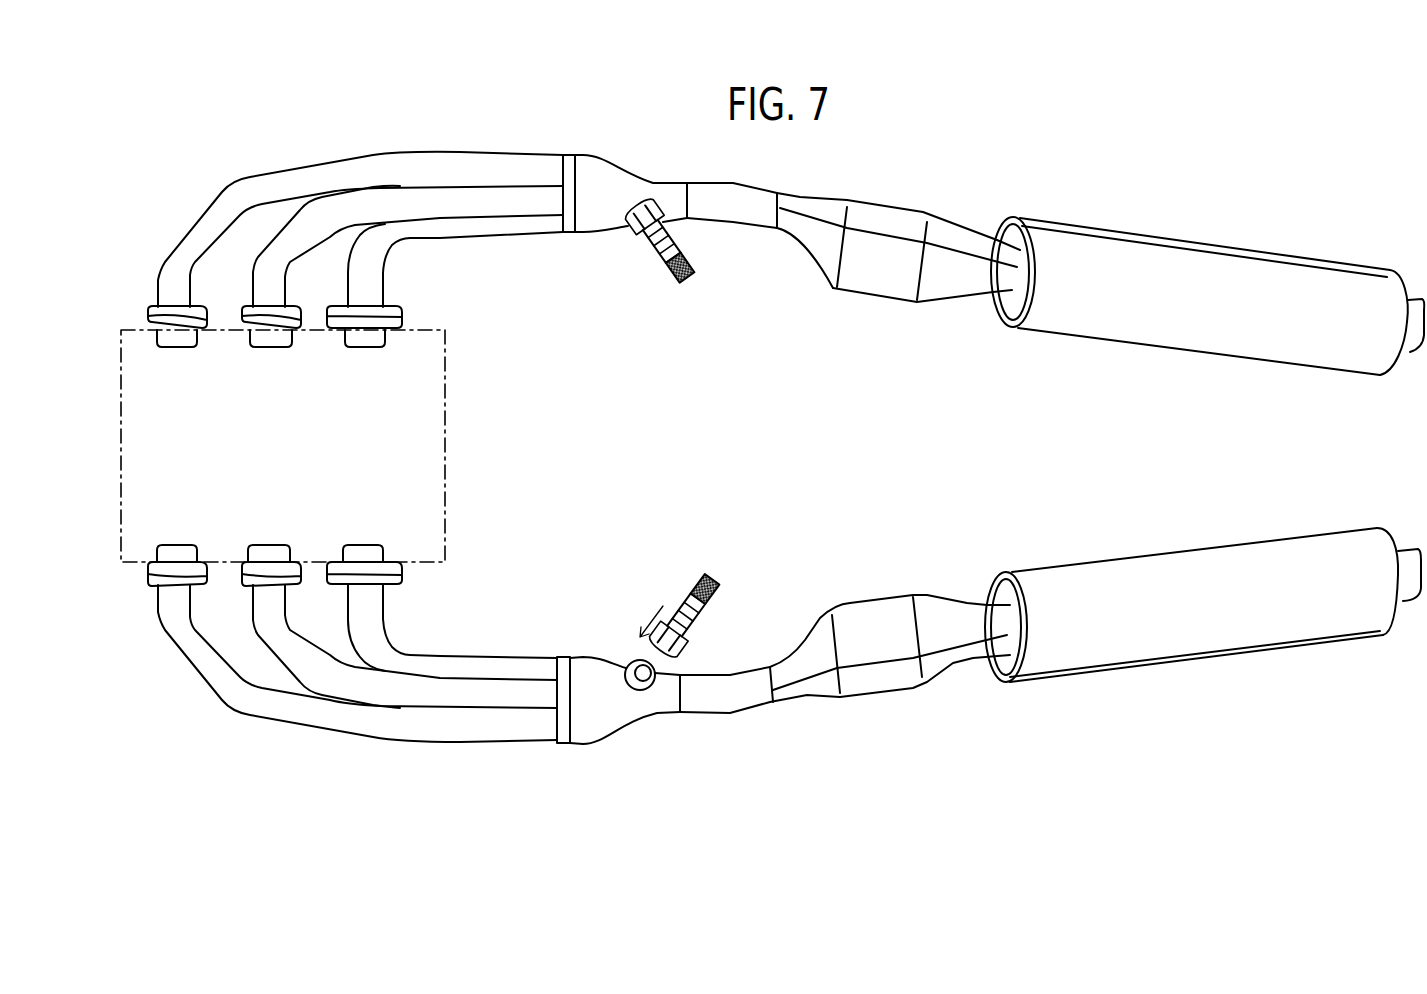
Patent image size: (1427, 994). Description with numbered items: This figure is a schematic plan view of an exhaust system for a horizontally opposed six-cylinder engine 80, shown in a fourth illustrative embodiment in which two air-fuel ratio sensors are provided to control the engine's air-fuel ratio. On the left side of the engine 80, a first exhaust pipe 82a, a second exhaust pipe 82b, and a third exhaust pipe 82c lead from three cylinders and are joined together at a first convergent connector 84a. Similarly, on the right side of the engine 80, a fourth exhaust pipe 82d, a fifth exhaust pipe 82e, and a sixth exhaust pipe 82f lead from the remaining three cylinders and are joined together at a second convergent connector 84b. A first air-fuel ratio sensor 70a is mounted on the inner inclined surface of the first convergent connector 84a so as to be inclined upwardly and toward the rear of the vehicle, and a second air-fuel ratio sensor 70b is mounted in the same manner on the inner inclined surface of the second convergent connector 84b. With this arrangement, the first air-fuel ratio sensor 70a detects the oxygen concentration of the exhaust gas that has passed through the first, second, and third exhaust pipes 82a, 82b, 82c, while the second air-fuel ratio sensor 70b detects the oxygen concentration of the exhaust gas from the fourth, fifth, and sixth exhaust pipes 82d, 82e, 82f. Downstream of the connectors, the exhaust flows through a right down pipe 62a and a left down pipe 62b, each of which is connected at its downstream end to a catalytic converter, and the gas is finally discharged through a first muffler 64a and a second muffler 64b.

The horizontally opposed six-cylinder engine 80 is at (448, 445).
The first exhaust pipe 82a is at (210, 680).
The second exhaust pipe 82b is at (277, 630).
The third exhaust pipe 82c is at (368, 610).
The fourth exhaust pipe 82d is at (213, 212).
The fifth exhaust pipe 82e is at (283, 263).
The sixth exhaust pipe 82f is at (370, 286).
The first convergent connector 84a is at (616, 718).
The second convergent connector 84b is at (620, 180).
The first air-fuel ratio sensor 70a is at (700, 627).
The second air-fuel ratio sensor 70b is at (653, 245).
The right down pipe 62a is at (884, 223).
The left down pipe 62b is at (870, 682).
The first muffler 64a is at (1128, 247).
The second muffler 64b is at (1162, 637).